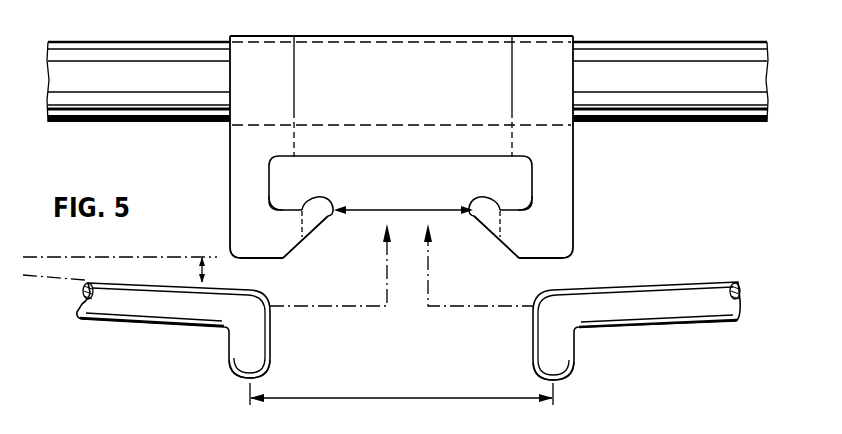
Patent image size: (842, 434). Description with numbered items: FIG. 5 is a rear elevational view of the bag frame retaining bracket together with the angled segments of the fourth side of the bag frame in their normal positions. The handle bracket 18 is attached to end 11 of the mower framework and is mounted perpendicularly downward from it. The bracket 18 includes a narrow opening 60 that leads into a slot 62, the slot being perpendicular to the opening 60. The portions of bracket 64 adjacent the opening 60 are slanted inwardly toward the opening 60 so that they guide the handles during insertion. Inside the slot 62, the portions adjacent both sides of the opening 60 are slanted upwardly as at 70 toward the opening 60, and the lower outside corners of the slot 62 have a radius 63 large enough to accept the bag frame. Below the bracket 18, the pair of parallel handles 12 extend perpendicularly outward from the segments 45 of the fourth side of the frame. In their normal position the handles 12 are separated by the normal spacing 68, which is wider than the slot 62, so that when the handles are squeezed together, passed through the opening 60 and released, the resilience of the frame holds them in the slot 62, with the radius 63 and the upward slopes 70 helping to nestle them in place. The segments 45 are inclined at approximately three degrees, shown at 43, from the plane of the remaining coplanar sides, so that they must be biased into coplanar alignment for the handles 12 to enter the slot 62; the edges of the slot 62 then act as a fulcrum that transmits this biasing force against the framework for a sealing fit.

The end 11 is at (148, 123).
The handle bracket 18 is at (575, 170).
The slot 62 is at (409, 187).
The radius 63 is at (285, 207).
The upwardly slanted portion 70 is at (309, 204).
The slanted portion of bracket 64 is at (308, 230).
The opening 60 is at (405, 210).
The three degree inclination 43 is at (210, 273).
The segment of the fourth side 45 is at (148, 328).
The handle 12 is at (228, 358).
The normal spacing of the handles 68 is at (417, 396).